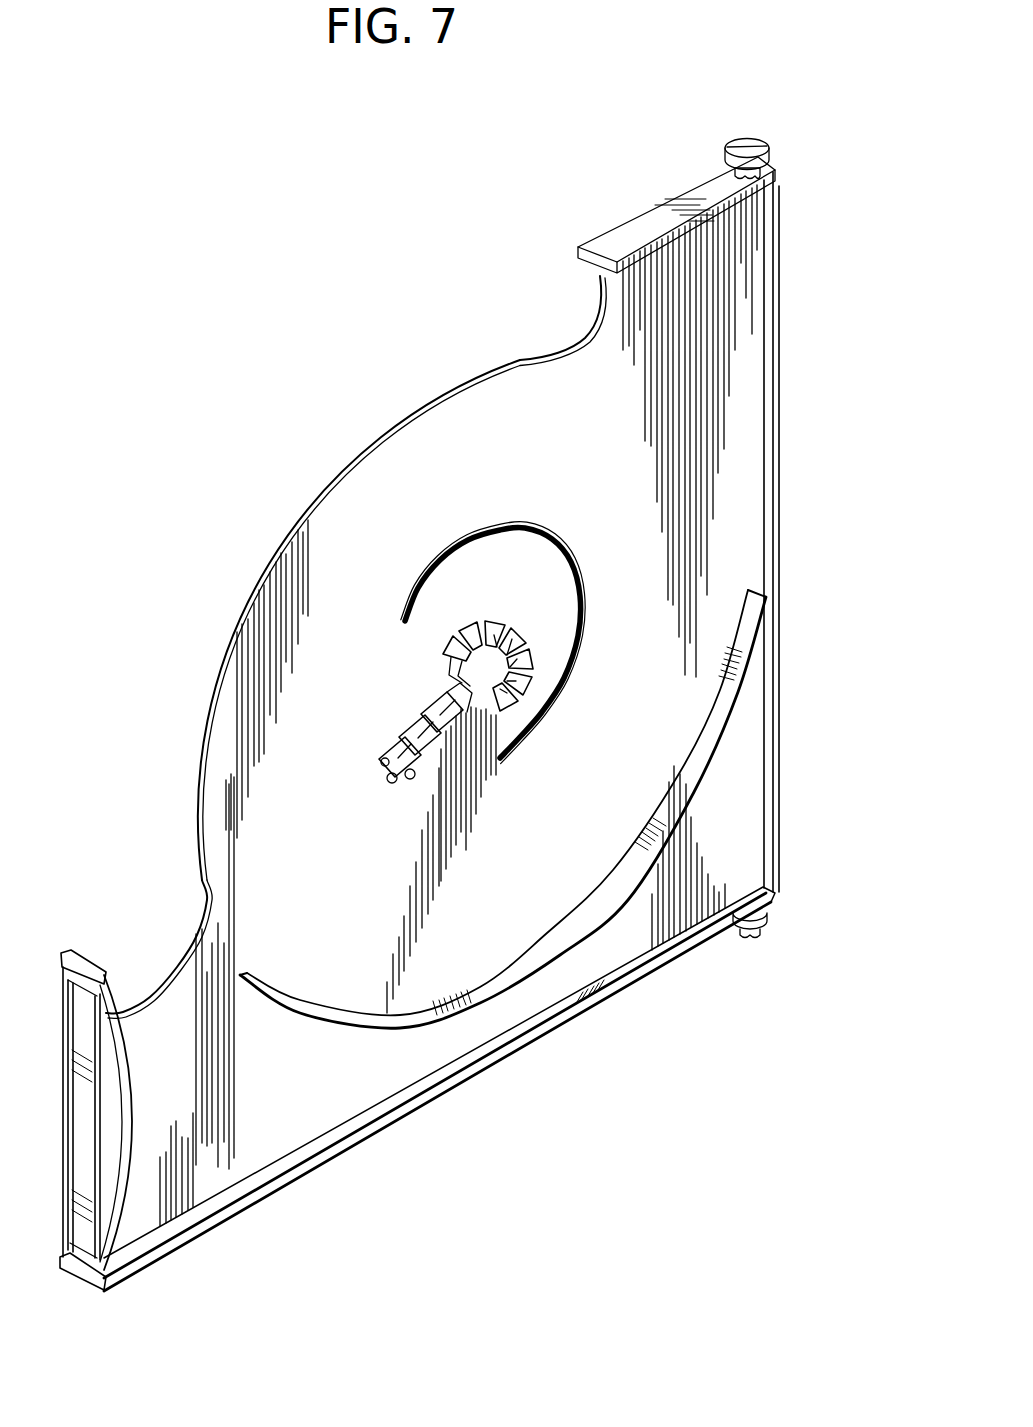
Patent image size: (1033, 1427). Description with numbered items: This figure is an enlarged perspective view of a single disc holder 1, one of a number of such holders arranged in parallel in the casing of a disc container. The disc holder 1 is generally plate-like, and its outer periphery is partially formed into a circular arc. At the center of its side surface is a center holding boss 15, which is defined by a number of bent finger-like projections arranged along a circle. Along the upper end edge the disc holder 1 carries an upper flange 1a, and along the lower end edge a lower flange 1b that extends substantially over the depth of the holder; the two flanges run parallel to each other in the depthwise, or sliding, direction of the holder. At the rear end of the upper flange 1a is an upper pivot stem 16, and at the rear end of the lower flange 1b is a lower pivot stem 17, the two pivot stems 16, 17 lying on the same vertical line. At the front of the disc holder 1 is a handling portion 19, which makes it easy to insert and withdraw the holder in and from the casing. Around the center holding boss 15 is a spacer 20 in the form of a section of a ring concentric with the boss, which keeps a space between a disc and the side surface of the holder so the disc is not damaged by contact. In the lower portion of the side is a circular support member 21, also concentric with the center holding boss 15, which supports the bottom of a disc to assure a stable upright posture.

The disc holder 1 is at (289, 512).
The upper flange 1a is at (660, 210).
The lower flange 1b is at (568, 1016).
The center holding boss 15 is at (415, 728).
The upper pivot stem 16 is at (752, 140).
The lower pivot stem 17 is at (746, 938).
The handling portion 19 is at (85, 958).
The spacer 20 is at (580, 590).
The circular support member 21 is at (697, 800).